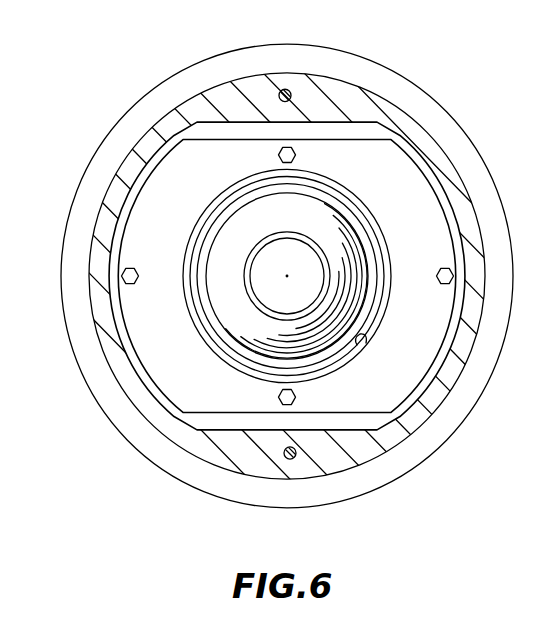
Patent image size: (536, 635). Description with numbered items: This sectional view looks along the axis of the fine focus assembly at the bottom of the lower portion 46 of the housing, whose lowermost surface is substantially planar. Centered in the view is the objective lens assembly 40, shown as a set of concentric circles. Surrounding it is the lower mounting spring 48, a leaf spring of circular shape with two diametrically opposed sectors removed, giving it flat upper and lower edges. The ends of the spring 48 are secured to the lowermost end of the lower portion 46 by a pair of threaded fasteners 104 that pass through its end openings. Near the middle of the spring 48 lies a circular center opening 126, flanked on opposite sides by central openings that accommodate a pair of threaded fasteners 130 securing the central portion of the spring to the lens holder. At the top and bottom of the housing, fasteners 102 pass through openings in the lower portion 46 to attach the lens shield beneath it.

The objective lens assembly 40 is at (308, 221).
The lower portion of the housing 46 is at (124, 116).
The lower mounting spring 48 is at (415, 367).
The fasteners 102 is at (287, 91).
The threaded fasteners 104 is at (450, 272).
The center opening 126 is at (365, 343).
The threaded fasteners 130 is at (294, 394).